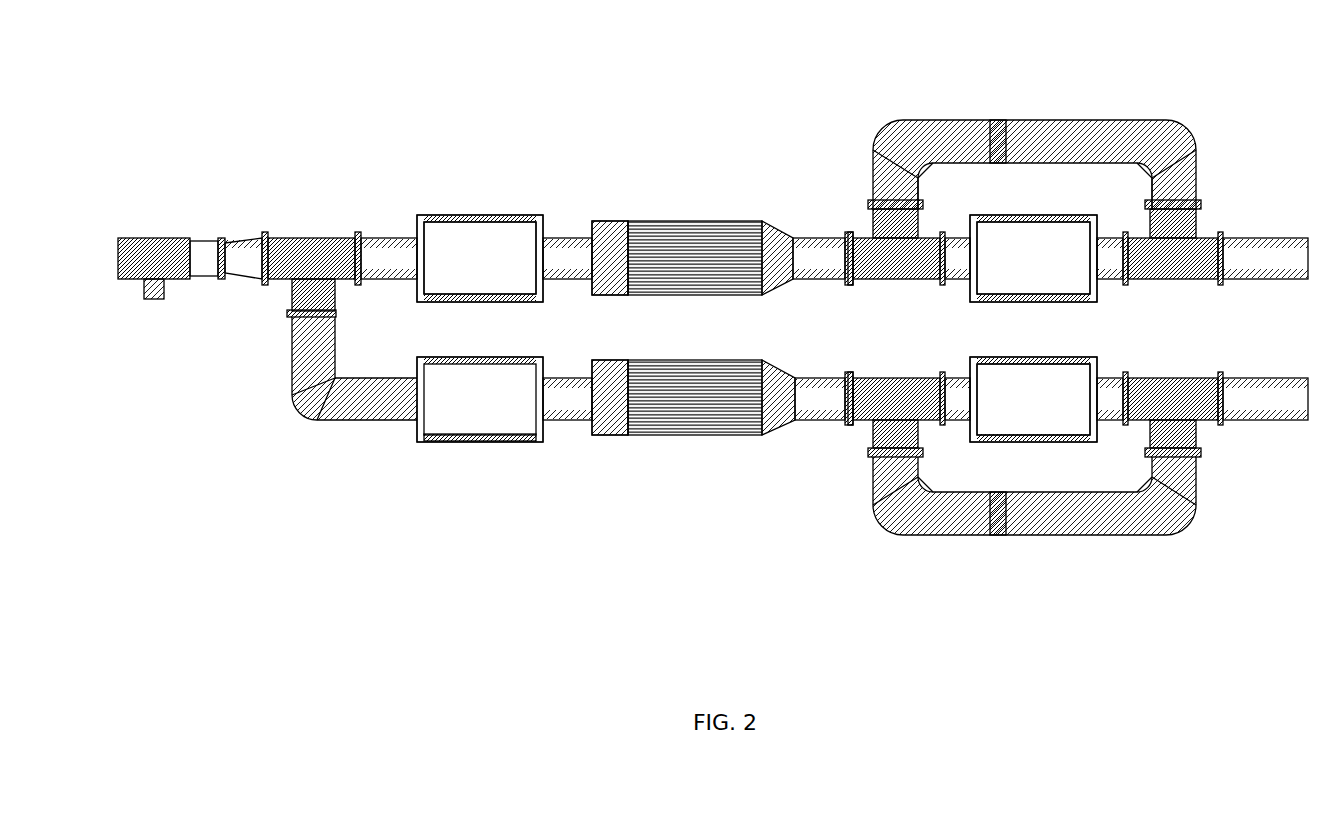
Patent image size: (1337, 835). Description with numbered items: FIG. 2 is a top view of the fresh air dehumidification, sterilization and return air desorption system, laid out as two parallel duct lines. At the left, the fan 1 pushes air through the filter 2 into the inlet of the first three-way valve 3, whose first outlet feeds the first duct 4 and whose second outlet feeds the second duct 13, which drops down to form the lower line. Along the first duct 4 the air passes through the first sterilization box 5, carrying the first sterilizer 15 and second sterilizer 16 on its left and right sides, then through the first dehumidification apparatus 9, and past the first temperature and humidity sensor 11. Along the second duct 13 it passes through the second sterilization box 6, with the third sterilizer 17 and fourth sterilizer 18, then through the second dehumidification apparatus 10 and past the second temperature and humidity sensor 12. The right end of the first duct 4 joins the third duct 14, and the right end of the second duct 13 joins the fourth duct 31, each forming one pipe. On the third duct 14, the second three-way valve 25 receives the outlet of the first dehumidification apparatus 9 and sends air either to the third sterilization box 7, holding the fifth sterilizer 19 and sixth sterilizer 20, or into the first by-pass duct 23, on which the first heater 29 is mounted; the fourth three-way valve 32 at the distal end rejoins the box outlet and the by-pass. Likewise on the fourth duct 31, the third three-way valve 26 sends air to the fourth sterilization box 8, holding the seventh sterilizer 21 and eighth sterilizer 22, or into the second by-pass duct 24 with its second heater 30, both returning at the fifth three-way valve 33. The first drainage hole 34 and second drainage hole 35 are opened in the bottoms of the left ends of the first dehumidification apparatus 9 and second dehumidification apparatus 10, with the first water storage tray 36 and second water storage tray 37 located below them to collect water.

The fan 1 is at (130, 255).
The filter 2 is at (220, 252).
The first three-way valve 3 is at (310, 262).
The first duct 4 is at (383, 260).
The first sterilization box 5 is at (490, 265).
The second sterilization box 6 is at (506, 402).
The third sterilization box 7 is at (1067, 273).
The fourth sterilization box 8 is at (1067, 405).
The first dehumidification apparatus 9 is at (685, 290).
The second dehumidification apparatus 10 is at (683, 395).
The first temperature and humidity sensor 11 is at (818, 260).
The second temperature and humidity sensor 12 is at (818, 398).
The second duct 13 is at (347, 420).
The third duct 14 is at (832, 262).
The first sterilizer 15 is at (505, 222).
The second sterilizer 16 is at (459, 292).
The third sterilizer 17 is at (1017, 222).
The fourth sterilizer 18 is at (1041, 300).
The fifth sterilizer 19 is at (439, 362).
The sixth sterilizer 20 is at (470, 437).
The seventh sterilizer 21 is at (1024, 358).
The eighth sterilizer 22 is at (1072, 438).
The first by-pass duct 23 is at (1090, 150).
The second by-pass duct 24 is at (1110, 518).
The second three-way valve 25 is at (891, 250).
The third three-way valve 26 is at (899, 452).
The first heater 29 is at (990, 130).
The second heater 30 is at (985, 518).
The fourth duct 31 is at (831, 412).
The fourth three-way valve 32 is at (1207, 253).
The fifth three-way valve 33 is at (1198, 388).
The first drainage hole 34 is at (610, 260).
The second drainage hole 35 is at (605, 405).
The first water storage tray 36 is at (610, 258).
The second water storage tray 37 is at (610, 382).